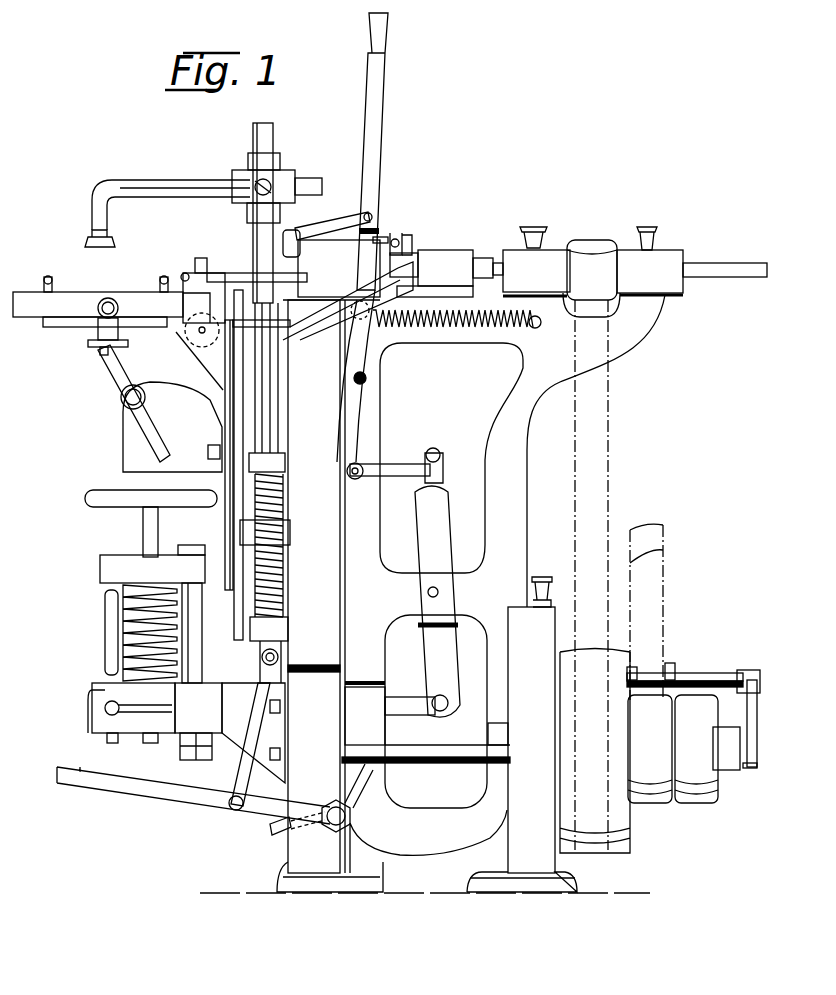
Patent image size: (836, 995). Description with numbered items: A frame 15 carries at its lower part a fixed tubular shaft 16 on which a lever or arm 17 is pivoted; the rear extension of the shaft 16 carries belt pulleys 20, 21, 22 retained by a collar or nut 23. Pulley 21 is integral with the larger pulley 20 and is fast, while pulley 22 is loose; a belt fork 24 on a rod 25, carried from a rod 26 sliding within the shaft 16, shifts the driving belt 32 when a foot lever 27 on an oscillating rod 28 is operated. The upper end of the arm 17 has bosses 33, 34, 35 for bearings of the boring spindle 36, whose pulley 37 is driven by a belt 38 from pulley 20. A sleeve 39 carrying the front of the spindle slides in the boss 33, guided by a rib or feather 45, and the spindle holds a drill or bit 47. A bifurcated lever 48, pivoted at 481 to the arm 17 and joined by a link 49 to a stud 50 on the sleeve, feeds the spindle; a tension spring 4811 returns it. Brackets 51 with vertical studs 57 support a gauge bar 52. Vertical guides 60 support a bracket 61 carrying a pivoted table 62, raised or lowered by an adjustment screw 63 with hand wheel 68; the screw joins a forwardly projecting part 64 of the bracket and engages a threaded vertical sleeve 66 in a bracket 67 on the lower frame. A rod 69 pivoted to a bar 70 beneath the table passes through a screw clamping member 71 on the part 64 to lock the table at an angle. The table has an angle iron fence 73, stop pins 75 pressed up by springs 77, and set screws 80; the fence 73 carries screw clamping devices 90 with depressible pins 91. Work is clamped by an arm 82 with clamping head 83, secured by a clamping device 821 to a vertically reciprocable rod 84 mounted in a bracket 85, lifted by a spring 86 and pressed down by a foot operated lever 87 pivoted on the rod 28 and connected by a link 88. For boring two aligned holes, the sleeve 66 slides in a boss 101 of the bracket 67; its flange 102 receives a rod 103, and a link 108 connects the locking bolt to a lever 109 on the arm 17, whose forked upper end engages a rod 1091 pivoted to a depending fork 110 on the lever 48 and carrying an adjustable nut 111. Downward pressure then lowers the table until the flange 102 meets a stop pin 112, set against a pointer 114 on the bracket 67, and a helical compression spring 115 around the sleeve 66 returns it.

The frame 15 is at (421, 586).
The fixed shaft 16 is at (370, 764).
The lever or arm 17 is at (425, 596).
The belt pulley 20 is at (595, 751).
The belt pulley 21 is at (650, 749).
The belt pulley 22 is at (696, 749).
The collar or nut 23 is at (730, 772).
The belt fork 24 is at (645, 666).
The rod 25 is at (720, 672).
The rod 26 is at (757, 760).
The foot lever 27 is at (275, 834).
The oscillating rod 28 is at (352, 817).
The driving belt 32 is at (665, 590).
The boss 33 is at (339, 268).
The boss 34 is at (536, 261).
The boss 35 is at (650, 261).
The boring spindle 36 is at (715, 262).
The pulley 37 is at (590, 240).
The belt 38 is at (610, 448).
The sleeve 39 is at (450, 273).
The rib or feather 45 is at (432, 250).
The drill or bit 47 is at (226, 272).
The bifurcated lever 48 is at (384, 162).
The pivot 481 is at (366, 378).
The tension spring 4811 is at (465, 332).
The link 49 is at (330, 224).
The stud 50 is at (300, 220).
The brackets 51 is at (368, 300).
The index plate or gauge bar 52 is at (396, 233).
The vertical studs 57 is at (412, 240).
The vertical guides 60 is at (225, 398).
The bracket 61 is at (200, 360).
The table 62 is at (98, 302).
The vertical adjustment screw 63 is at (143, 530).
The forwardly projecting part 64 is at (123, 446).
The vertical sleeve 66 is at (123, 627).
The bracket 67 is at (253, 733).
The hand wheel 68 is at (97, 496).
The rod 69 is at (118, 375).
The bar 70 is at (118, 337).
The screw clamping member 71 is at (126, 400).
The angle iron fence 73 is at (183, 300).
The stop pins 75 is at (158, 288).
The springs 77 is at (88, 344).
The set screws 80 is at (100, 352).
The arm 82 is at (170, 180).
The clamping device 821 is at (240, 172).
The clamping head 83 is at (88, 238).
The vertically reciprocable rod 84 is at (273, 135).
The bracket 85 is at (250, 630).
The spring 86 is at (284, 498).
The foot operated lever 87 is at (104, 792).
The link 88 is at (240, 775).
The screw clamping devices 90 is at (198, 262).
The depressible pin 91 is at (182, 276).
The boss 101 is at (157, 721).
The flange 102 is at (152, 564).
The rod 103 is at (202, 600).
The link 108 is at (405, 715).
The lever 109 is at (458, 590).
The rod 1091 is at (412, 463).
The depending fork 110 is at (360, 418).
The nut 111 is at (440, 452).
The stop pin 112 is at (105, 600).
The pointer or finger 114 is at (95, 688).
The helical compression spring 115 is at (92, 722).